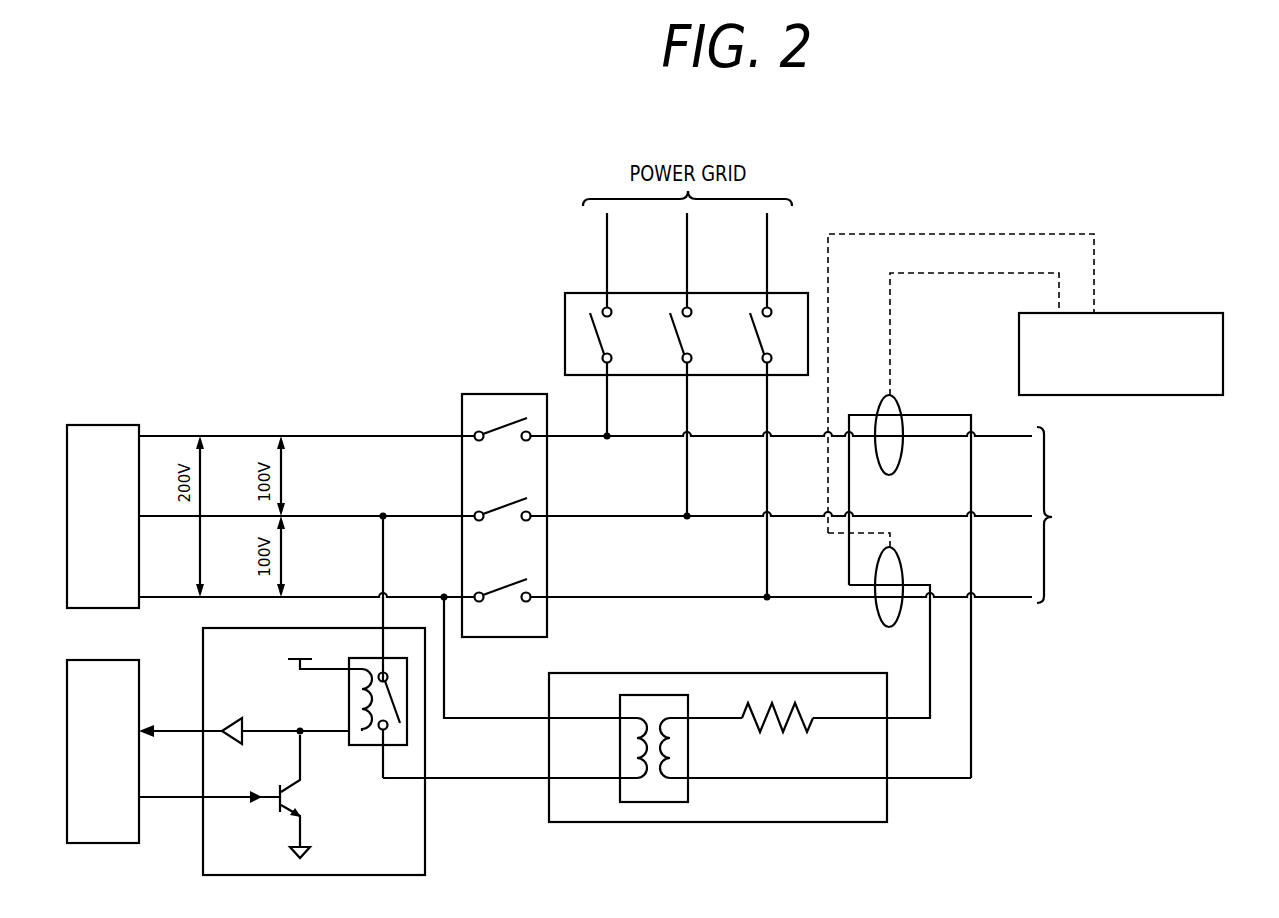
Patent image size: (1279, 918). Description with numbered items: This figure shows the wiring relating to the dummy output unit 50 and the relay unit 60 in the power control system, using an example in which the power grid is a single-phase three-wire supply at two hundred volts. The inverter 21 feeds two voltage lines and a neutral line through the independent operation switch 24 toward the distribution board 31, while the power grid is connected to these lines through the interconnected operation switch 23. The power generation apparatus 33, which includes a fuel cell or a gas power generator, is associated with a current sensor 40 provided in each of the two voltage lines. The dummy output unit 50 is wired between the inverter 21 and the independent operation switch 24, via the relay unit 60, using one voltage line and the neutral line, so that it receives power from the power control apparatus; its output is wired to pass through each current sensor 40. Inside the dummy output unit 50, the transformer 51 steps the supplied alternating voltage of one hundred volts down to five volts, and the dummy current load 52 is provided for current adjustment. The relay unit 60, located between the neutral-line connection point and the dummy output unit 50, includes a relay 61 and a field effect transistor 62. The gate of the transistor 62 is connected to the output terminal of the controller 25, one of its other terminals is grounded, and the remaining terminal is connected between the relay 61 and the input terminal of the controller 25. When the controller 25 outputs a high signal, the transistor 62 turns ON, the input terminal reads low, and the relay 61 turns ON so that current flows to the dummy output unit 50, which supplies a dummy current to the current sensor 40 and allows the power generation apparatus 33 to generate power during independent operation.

The inverter 21 is at (100, 425).
The interconnected operation switch 23 is at (565, 312).
The independent operation switch 24 is at (500, 394).
The controller 25 is at (139, 825).
The distribution board 31 is at (1155, 515).
The power generation apparatus 33 is at (1115, 313).
The current sensor 40 is at (900, 403).
The dummy output unit 50 is at (718, 755).
The transformer 51 is at (655, 695).
The dummy current load 52 is at (783, 707).
The relay unit 60 is at (314, 751).
The relay 61 is at (383, 702).
The field effect transistor 62 is at (293, 795).